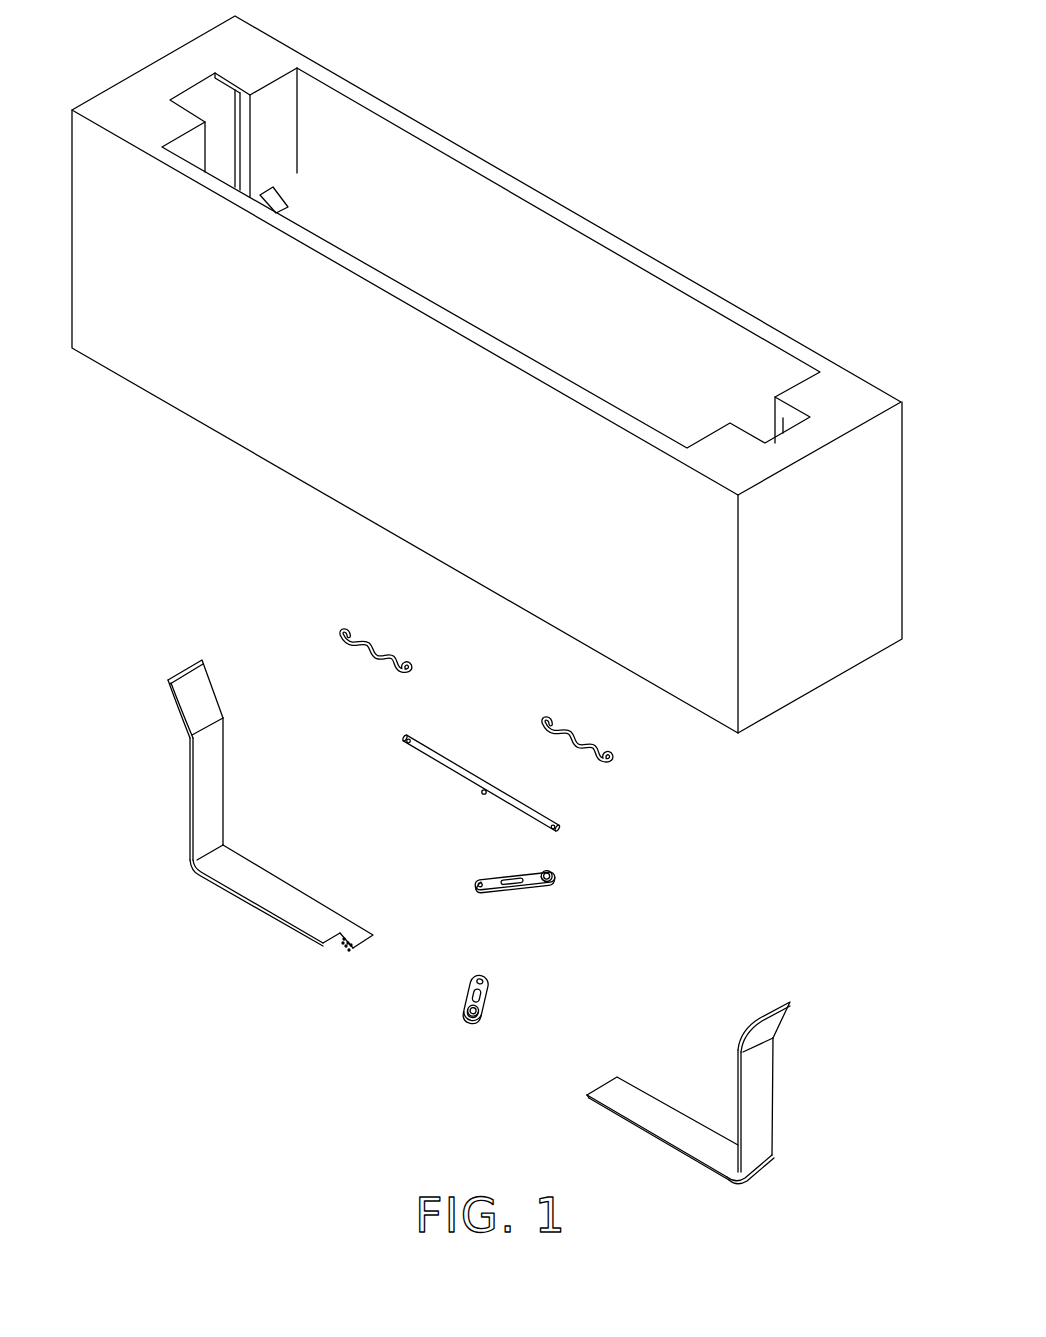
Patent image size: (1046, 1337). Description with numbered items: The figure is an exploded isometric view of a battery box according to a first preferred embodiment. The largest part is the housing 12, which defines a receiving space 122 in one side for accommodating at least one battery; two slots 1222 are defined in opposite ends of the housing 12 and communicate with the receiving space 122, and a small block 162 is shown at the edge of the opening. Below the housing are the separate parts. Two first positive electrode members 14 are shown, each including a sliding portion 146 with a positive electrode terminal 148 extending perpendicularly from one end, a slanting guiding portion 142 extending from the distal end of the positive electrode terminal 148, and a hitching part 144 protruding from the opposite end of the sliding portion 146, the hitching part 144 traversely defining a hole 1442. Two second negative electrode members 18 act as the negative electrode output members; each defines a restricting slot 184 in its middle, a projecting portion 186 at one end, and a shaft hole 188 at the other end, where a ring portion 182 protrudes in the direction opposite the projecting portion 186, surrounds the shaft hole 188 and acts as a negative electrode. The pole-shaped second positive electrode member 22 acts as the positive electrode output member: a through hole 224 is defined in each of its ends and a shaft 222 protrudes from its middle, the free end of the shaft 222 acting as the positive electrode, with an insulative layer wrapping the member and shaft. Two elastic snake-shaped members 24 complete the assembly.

The housing 12 is at (506, 374).
The receiving space 122 is at (488, 232).
The slots 1222 is at (208, 102).
The protrusion block 162 is at (275, 200).
The first positive electrode member 14 is at (481, 911).
The slanting guiding portion 142 is at (197, 683).
The hitching part 144 is at (303, 967).
The hole 1442 is at (301, 956).
The sliding portion 146 is at (267, 893).
The positive electrode terminal 148 is at (212, 790).
The second negative electrode member 18 is at (511, 929).
The ring portion 182 is at (476, 891).
The restricting slot 184 is at (507, 877).
The projecting portion 186 is at (556, 874).
The shaft hole 188 is at (470, 880).
The second positive electrode member 22 is at (460, 786).
The shaft 222 is at (478, 791).
The through hole 224 is at (407, 741).
The elastic snake-shaped member 24 is at (396, 647).